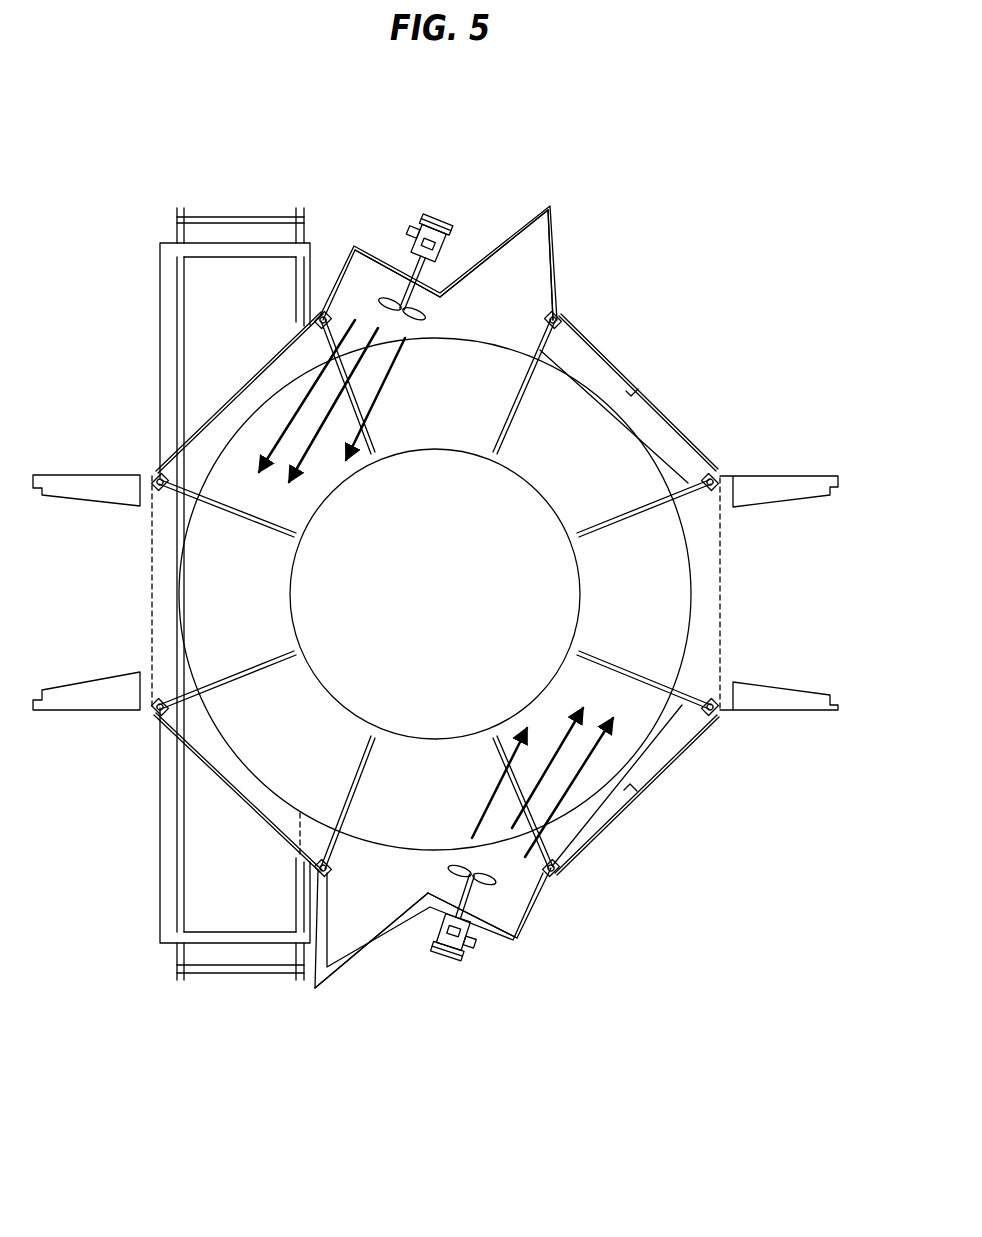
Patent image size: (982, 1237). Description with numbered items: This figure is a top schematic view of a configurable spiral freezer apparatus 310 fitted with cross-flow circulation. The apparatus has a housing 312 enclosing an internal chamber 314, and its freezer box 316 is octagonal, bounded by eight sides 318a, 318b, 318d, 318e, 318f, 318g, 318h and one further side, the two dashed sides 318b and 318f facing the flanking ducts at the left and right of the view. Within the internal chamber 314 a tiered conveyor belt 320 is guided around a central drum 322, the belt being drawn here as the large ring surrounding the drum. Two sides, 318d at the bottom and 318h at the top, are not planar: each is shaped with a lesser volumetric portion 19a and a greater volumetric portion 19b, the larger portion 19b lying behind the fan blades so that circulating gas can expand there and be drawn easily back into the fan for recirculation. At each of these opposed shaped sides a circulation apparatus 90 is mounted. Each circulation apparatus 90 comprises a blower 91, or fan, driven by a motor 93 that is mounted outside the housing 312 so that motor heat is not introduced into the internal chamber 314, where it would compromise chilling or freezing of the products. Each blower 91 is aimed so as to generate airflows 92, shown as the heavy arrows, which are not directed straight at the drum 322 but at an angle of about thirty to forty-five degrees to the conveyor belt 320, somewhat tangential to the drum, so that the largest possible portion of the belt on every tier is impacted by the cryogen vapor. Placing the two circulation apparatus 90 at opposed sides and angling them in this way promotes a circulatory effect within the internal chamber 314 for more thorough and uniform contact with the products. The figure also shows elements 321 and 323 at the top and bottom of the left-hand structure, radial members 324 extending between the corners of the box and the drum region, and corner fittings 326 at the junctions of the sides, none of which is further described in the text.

The freezer apparatus 310 is at (636, 143).
The housing 312 is at (418, 575).
The internal chamber 314 is at (255, 388).
The freezer box 316 is at (568, 248).
The side 318a is at (220, 407).
The side 318b is at (150, 578).
The side 318d is at (345, 963).
The side 318e is at (655, 770).
The side 318f is at (722, 597).
The side 318g is at (612, 360).
The side 318h is at (565, 214).
The lesser volumetric portion 19a is at (371, 287).
The greater volumetric portion 19b is at (493, 280).
The circulation apparatus 90 is at (430, 210).
The blower 91 is at (417, 317).
The airflows 92 is at (380, 392).
The motor 93 is at (438, 257).
The conveyor belt 320 is at (252, 310).
The top flange 321 is at (197, 278).
The drum 322 is at (328, 502).
The bottom flange 323 is at (195, 905).
The strut 324 is at (272, 532).
The fastener 326 is at (160, 712).